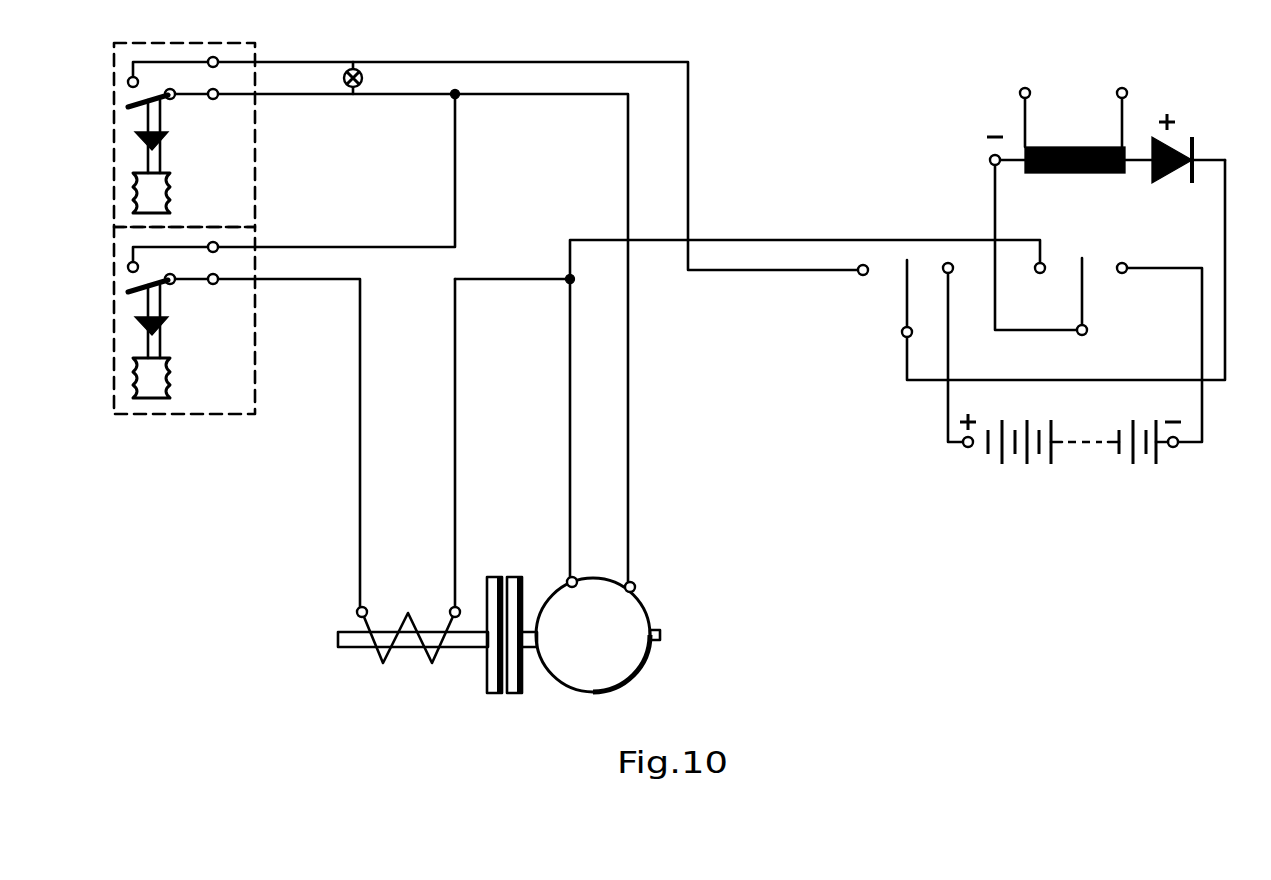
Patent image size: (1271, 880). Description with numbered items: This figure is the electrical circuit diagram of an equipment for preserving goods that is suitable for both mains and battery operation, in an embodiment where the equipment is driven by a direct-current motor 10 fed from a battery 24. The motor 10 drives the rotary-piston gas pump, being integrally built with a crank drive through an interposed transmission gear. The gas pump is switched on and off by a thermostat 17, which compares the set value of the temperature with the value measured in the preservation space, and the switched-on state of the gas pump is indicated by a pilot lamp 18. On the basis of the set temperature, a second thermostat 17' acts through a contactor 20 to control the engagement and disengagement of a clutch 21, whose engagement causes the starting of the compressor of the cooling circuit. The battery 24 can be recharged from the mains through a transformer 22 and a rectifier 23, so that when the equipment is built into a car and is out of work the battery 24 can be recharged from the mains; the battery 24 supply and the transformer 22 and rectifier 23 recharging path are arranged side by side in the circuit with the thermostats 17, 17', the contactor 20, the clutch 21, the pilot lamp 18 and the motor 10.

The motor 10 is at (622, 618).
The thermostat 17 is at (486, 312).
The thermostat 17' is at (284, 353).
The pilot lamp 18 is at (361, 74).
The contactor 20 is at (408, 620).
The clutch 21 is at (510, 585).
The transformer 22 is at (1071, 175).
The rectifier 23 is at (1170, 178).
The battery 24 is at (1071, 445).